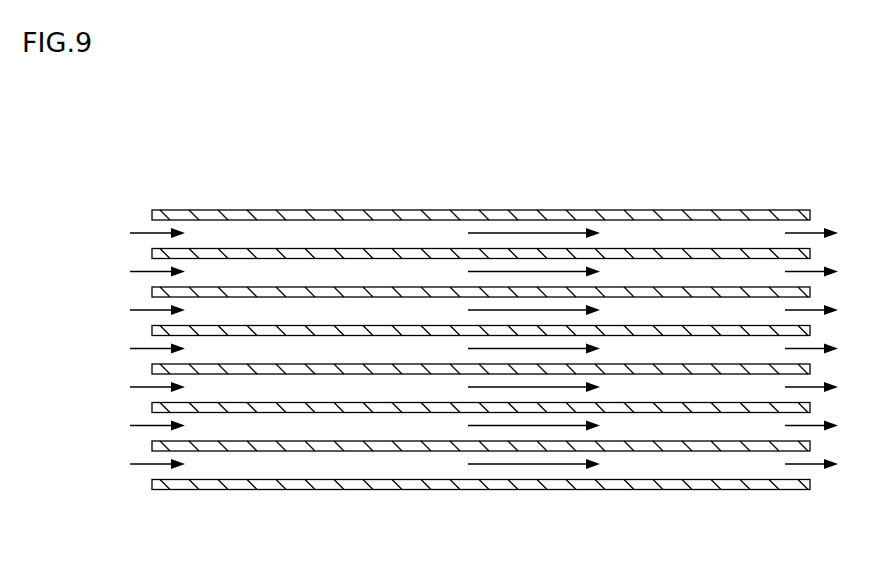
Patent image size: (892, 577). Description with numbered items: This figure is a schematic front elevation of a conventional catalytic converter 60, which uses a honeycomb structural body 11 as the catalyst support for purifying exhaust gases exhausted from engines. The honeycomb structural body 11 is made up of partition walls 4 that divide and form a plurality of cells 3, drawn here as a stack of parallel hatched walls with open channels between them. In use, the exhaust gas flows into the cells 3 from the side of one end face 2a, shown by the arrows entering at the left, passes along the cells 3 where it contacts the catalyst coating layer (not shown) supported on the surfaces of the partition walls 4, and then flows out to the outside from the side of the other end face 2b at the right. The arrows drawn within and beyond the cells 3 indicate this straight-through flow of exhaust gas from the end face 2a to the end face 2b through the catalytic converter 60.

The catalytic converter 60 is at (481, 332).
The honeycomb structural body 11 is at (481, 171).
The cell 3 is at (660, 237).
The partition wall 4 is at (398, 404).
The end face 2a is at (152, 196).
The end face 2b is at (809, 196).